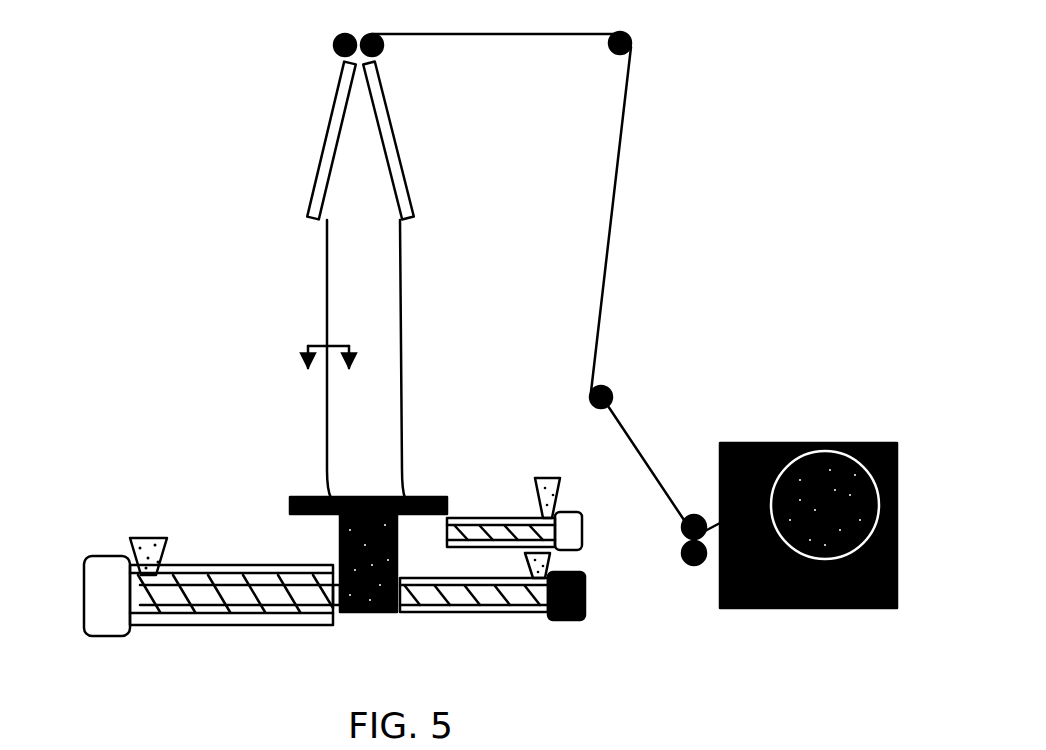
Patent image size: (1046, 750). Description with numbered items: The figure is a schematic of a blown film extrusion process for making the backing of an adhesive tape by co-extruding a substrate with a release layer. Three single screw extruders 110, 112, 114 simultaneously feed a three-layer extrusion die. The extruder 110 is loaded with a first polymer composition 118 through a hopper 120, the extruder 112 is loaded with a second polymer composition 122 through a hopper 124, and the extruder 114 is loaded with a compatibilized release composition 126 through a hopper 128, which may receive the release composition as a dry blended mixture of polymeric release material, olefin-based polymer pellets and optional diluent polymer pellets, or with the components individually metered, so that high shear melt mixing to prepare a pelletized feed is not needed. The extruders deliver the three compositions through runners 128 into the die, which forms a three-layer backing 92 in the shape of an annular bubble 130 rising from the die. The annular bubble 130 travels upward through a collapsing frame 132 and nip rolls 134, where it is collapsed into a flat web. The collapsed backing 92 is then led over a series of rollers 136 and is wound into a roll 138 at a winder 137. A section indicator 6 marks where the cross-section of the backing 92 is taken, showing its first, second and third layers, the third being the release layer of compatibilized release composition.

The section line for FIG. 6 is at (327, 378).
The 3-layer backing 92 is at (403, 352).
The single screw extruder 110 is at (527, 610).
The single screw extruder 112 is at (185, 563).
The single screw extruder 114 is at (547, 494).
The first polymer composition 118 is at (527, 548).
The hopper 120 is at (555, 563).
The second polymer composition 122 is at (141, 538).
The hopper 124 is at (183, 552).
The compatibilized release composition 126 is at (545, 480).
The hopper 128 is at (534, 498).
The annular-shaped bubble 130 is at (408, 412).
The collapsing frame 132 is at (320, 148).
The nip rolls 134 is at (333, 53).
The rollers 136 is at (632, 44).
The winder 137 is at (756, 437).
The roll 138 is at (830, 450).